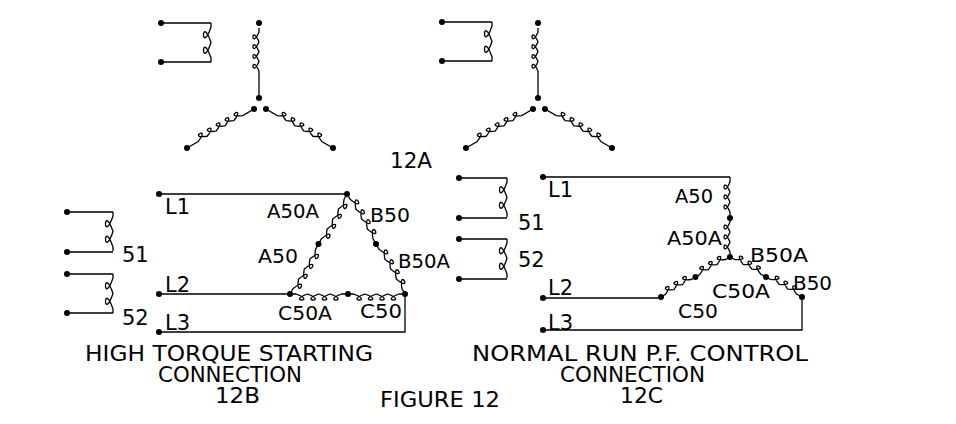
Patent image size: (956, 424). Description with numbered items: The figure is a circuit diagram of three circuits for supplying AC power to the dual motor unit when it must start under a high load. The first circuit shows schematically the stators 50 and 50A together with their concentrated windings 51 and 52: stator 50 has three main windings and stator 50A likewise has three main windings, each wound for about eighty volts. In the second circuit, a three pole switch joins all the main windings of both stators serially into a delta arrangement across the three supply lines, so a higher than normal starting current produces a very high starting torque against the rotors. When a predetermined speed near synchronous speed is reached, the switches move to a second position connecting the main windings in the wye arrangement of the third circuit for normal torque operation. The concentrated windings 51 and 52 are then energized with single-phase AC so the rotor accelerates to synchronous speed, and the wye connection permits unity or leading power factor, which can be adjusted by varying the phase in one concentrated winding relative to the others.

The stator 50 is at (291, 86).
The stator 50A is at (579, 87).
The concentrated winding 51 is at (203, 48).
The concentrated winding 52 is at (483, 48).